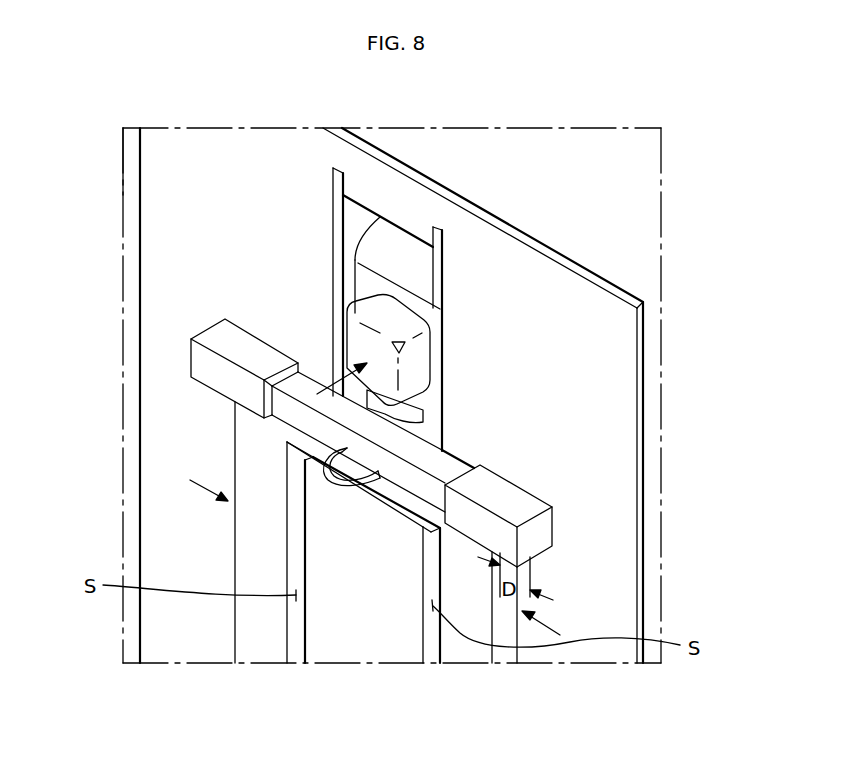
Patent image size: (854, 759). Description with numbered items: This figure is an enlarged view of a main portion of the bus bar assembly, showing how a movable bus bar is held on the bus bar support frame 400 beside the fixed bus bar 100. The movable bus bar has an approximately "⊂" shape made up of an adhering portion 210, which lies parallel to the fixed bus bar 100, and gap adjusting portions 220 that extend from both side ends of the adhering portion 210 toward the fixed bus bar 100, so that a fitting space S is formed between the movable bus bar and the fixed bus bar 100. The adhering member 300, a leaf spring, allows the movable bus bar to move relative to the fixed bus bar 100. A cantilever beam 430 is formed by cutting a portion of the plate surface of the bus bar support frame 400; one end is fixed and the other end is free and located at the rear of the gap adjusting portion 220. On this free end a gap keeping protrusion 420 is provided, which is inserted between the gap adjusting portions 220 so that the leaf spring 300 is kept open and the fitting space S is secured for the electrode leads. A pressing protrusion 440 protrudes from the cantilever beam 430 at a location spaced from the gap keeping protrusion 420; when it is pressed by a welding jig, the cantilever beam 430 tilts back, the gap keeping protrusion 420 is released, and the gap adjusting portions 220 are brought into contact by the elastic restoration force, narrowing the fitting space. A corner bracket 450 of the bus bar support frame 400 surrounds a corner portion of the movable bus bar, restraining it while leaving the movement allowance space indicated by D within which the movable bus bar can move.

The fixed bus bar 100 is at (372, 627).
The adhering portion 210 is at (257, 467).
The gap adjusting portion 220 is at (295, 423).
The adhering member 300 is at (340, 485).
The bus bar support frame 400 is at (670, 312).
The gap keeping protrusion 420 is at (388, 415).
The cantilever beam 430 is at (390, 272).
The pressing protrusion 440 is at (375, 358).
The corner bracket 450 is at (207, 368).